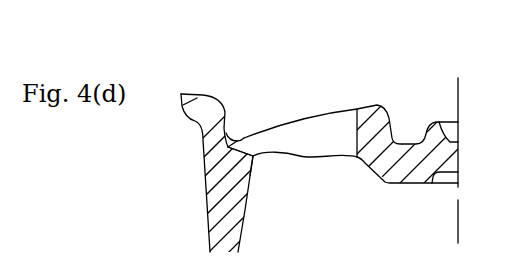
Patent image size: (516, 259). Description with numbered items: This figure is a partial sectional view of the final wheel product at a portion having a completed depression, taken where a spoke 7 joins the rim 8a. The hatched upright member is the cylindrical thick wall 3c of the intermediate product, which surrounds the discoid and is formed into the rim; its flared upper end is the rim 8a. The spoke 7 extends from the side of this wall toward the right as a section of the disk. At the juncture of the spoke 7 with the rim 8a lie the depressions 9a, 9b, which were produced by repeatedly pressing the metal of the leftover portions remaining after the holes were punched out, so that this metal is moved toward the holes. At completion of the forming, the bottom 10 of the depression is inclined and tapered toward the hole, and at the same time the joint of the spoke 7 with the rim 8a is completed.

The cylindrical thick wall 3c is at (208, 222).
The rim 8a is at (205, 75).
The depression 9a is at (245, 132).
The depression 9b is at (258, 97).
The spoke 7 is at (318, 97).
The bottom of the depression 10 is at (253, 156).